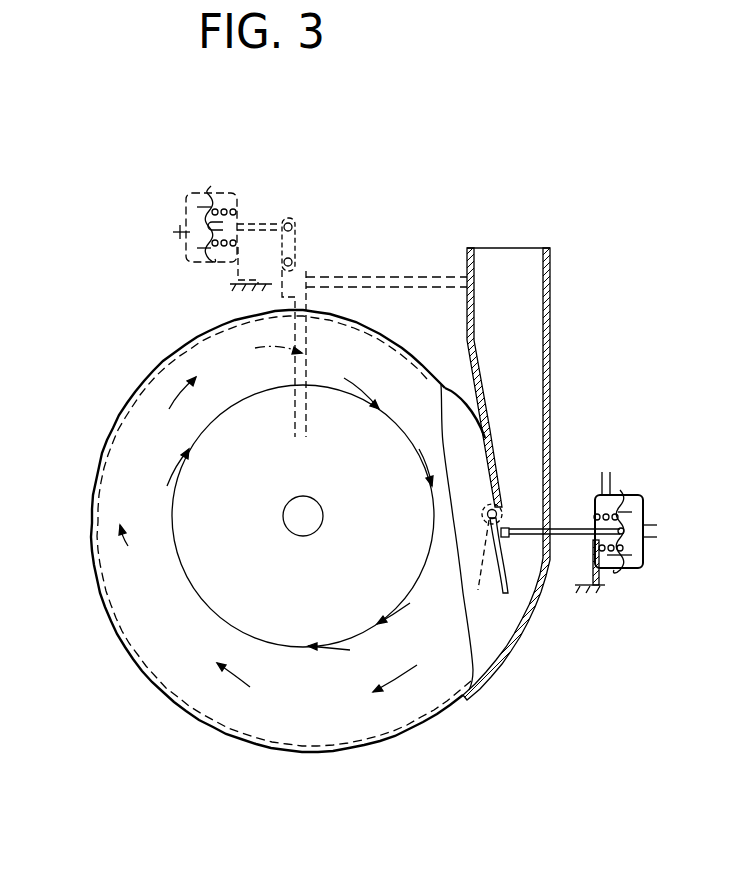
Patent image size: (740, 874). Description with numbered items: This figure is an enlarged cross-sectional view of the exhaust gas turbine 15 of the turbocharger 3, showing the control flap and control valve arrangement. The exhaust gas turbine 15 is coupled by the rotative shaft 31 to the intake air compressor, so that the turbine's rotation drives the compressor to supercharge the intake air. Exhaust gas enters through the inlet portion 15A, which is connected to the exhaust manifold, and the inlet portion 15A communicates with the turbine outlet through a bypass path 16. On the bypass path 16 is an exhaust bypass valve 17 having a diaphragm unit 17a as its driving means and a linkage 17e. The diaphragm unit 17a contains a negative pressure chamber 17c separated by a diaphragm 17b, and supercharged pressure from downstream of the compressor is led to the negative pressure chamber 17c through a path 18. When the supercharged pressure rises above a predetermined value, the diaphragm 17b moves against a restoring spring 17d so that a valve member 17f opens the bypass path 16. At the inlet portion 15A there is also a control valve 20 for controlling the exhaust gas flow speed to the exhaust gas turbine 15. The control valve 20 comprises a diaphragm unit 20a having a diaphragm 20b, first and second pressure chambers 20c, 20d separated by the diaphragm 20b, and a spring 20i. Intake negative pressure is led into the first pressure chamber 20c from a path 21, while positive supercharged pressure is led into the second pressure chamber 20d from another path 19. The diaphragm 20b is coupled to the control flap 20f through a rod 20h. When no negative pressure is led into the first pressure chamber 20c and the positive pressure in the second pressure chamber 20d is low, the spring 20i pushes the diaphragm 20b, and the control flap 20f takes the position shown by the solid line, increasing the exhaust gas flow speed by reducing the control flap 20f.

The turbocharger 3 is at (93, 442).
The exhaust gas turbine 15 is at (313, 601).
The inlet portion 15A is at (550, 355).
The bypass path 16 is at (418, 275).
The exhaust bypass valve 17 is at (252, 281).
The diaphragm unit 17a is at (216, 170).
The diaphragm 17b is at (212, 190).
The negative pressure chamber 17c is at (186, 235).
The restoring spring 17d is at (236, 211).
The linkage 17e is at (300, 237).
The valve member 17f is at (310, 297).
The path 18 is at (182, 222).
The path 19 is at (657, 537).
The control valve 20 is at (628, 531).
The diaphragm unit 20a is at (600, 492).
The diaphragm 20b is at (622, 572).
The first pressure chamber 20c is at (610, 567).
The second pressure chamber 20d is at (638, 567).
The control flap 20f is at (508, 576).
The rod 20h is at (563, 520).
The spring 20i is at (616, 502).
The path 21 is at (615, 490).
The rotative shaft 31 is at (318, 521).